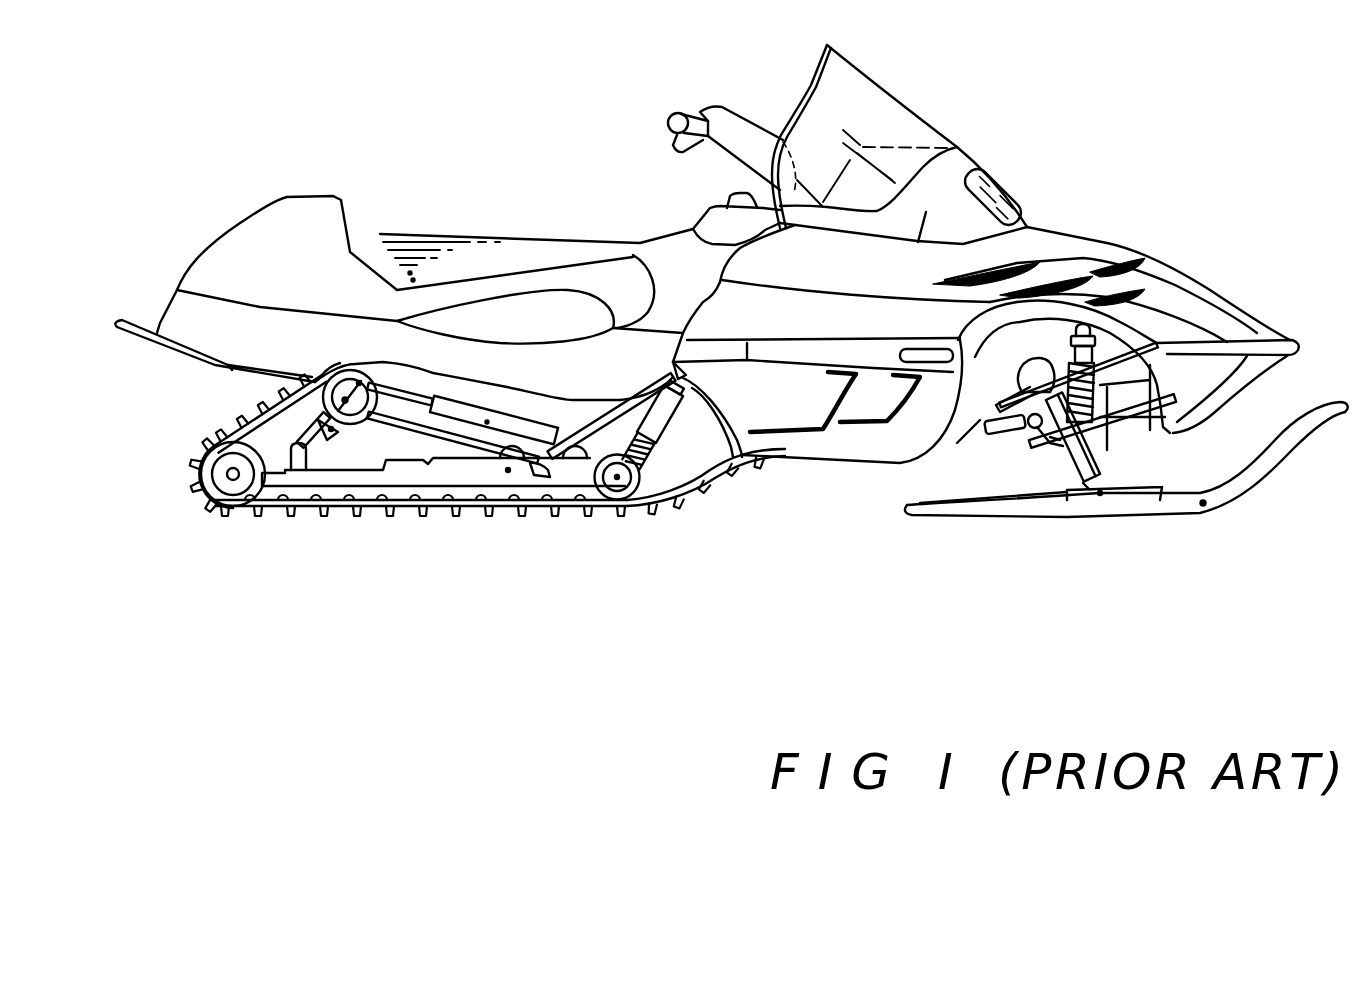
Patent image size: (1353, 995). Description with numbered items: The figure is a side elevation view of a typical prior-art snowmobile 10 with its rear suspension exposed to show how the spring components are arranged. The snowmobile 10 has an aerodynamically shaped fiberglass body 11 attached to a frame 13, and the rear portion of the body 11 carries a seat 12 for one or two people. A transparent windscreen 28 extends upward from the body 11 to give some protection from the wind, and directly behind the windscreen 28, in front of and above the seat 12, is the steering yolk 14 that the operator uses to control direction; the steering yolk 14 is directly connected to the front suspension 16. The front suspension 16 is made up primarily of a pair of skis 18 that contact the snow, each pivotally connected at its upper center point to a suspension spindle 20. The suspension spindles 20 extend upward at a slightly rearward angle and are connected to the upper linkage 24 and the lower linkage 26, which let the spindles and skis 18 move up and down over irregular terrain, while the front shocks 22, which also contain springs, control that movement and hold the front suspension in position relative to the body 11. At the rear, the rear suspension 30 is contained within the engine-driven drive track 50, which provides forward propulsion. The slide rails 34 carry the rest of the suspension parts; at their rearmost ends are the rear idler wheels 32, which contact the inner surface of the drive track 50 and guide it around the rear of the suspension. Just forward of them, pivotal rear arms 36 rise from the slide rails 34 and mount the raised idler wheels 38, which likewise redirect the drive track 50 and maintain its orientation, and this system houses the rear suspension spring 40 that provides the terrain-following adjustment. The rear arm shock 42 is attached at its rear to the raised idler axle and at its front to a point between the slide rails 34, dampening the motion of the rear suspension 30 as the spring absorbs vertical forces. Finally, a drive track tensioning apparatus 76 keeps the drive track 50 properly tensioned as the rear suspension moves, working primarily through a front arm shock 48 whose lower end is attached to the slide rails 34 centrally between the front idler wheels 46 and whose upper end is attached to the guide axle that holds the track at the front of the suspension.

The snowmobile 10 is at (1060, 185).
The body 11 is at (1108, 247).
The seat 12 is at (470, 236).
The frame 13 is at (332, 328).
The steering yolk 14 is at (700, 110).
The front suspension 16 is at (1024, 450).
The skis 18 is at (1040, 517).
The suspension spindles 20 is at (1093, 482).
The front shocks 22 is at (1097, 345).
The upper linkage 24 is at (1087, 405).
The lower linkage 26 is at (1138, 410).
The windscreen 28 is at (925, 117).
The rear suspension 30 is at (222, 545).
The rear idler wheels 32 is at (218, 467).
The slide rails 34 is at (343, 490).
The rear arms 36 is at (308, 462).
The raised idler wheels 38 is at (340, 380).
The rear suspension spring 40 is at (381, 443).
The rear arm shock 42 is at (487, 433).
The front idler wheels 46 is at (620, 493).
The front arm shock 48 is at (686, 451).
The drive track 50 is at (190, 503).
The drive track tensioning apparatus 76 is at (695, 445).